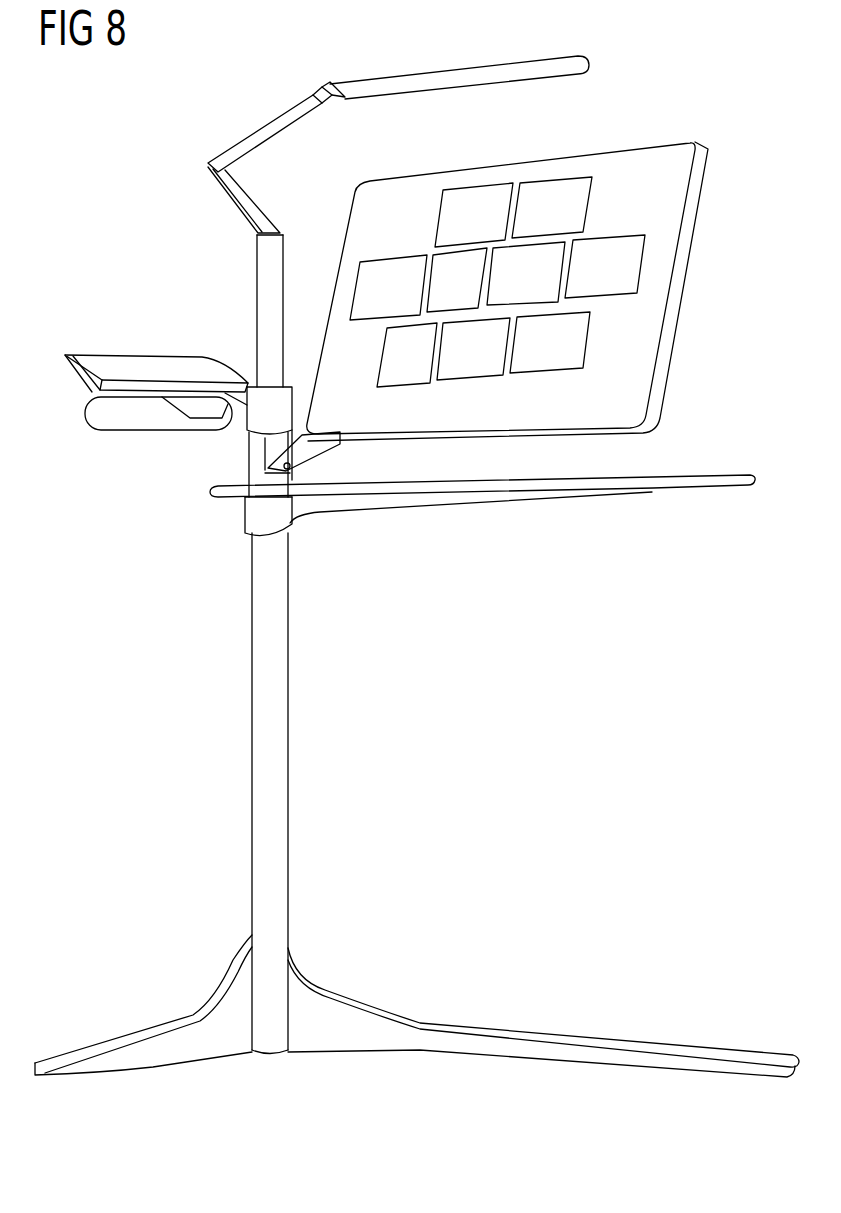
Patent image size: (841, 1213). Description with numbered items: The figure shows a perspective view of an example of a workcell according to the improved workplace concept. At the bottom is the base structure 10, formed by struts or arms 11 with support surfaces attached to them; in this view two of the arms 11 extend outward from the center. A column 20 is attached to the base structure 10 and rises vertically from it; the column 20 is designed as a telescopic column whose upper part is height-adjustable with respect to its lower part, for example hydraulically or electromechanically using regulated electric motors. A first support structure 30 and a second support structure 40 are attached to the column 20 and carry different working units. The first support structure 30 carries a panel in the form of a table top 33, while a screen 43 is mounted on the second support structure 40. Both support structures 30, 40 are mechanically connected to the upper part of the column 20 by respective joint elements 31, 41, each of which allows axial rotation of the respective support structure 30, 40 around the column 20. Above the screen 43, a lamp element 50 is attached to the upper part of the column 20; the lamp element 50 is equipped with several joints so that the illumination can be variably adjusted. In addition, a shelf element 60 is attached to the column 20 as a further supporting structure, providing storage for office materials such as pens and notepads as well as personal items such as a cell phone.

The base structure 10 is at (417, 992).
The strut 11 is at (140, 1033).
The column 20 is at (315, 748).
The first support structure 30 is at (482, 541).
The joint element 31 is at (275, 517).
The table top 33 is at (702, 488).
The second support structure 40 is at (473, 313).
The joint element 41 is at (258, 452).
The screen 43 is at (687, 263).
The lamp element 50 is at (593, 80).
The shelf element 60 is at (143, 370).